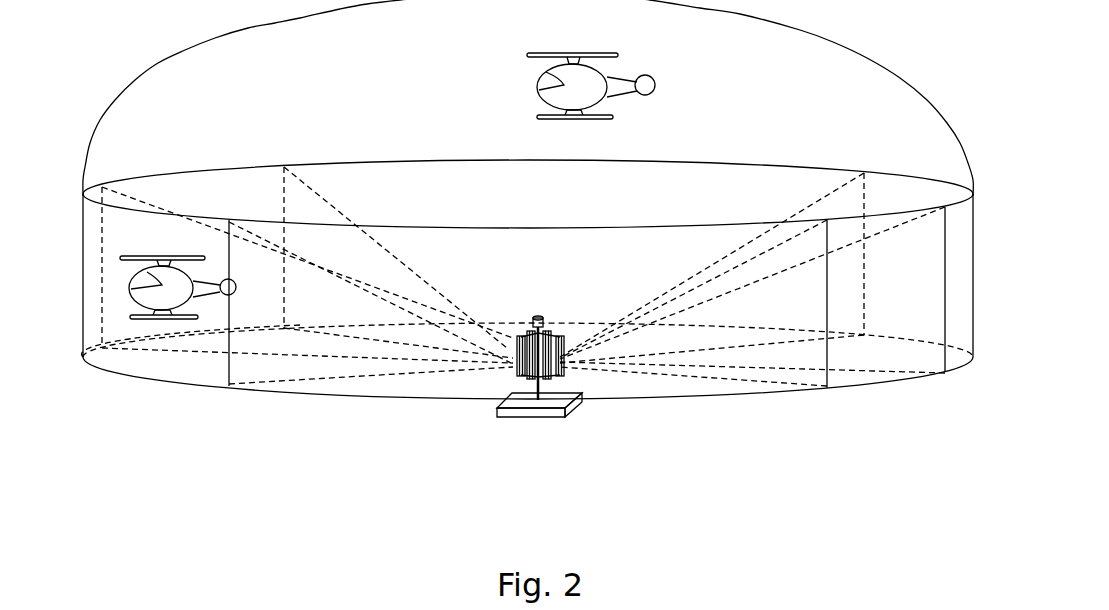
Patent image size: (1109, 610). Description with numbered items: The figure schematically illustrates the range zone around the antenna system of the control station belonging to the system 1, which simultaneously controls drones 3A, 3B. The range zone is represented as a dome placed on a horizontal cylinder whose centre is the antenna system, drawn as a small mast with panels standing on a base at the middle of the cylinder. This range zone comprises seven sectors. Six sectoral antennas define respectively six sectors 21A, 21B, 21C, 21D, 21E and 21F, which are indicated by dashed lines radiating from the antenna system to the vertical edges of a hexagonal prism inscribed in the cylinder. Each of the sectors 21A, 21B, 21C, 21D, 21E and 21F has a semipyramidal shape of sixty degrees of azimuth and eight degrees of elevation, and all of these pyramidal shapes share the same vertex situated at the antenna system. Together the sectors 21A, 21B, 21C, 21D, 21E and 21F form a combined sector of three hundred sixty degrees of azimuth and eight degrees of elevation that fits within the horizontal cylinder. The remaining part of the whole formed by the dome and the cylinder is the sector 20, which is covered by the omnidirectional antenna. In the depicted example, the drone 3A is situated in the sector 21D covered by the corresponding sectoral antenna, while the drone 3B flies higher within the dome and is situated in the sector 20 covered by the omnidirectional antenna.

The system 1 is at (497, 413).
The sector 20 is at (368, 100).
The drone 3A is at (238, 287).
The drone 3B is at (655, 83).
The sector 21A is at (717, 304).
The sector 21B is at (940, 295).
The sector 21C is at (594, 285).
The sector 21D is at (227, 353).
The sector 21E is at (227, 385).
The sector 21F is at (635, 395).